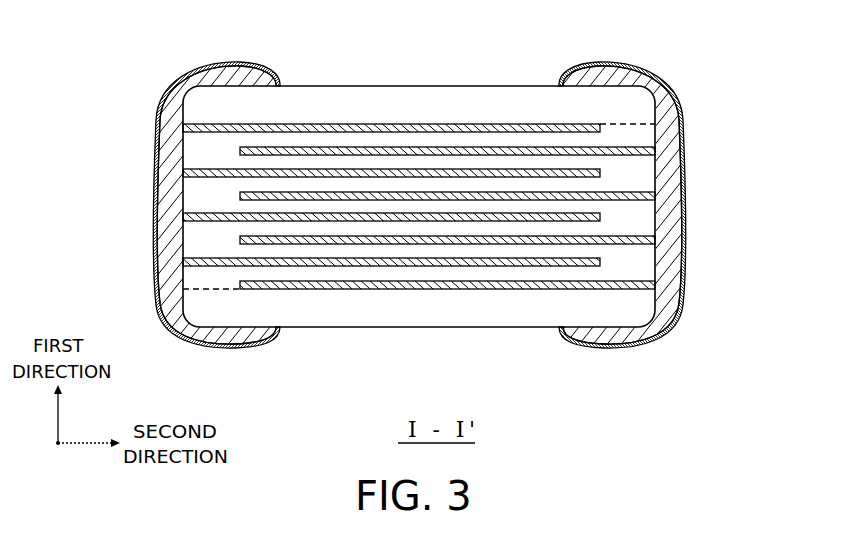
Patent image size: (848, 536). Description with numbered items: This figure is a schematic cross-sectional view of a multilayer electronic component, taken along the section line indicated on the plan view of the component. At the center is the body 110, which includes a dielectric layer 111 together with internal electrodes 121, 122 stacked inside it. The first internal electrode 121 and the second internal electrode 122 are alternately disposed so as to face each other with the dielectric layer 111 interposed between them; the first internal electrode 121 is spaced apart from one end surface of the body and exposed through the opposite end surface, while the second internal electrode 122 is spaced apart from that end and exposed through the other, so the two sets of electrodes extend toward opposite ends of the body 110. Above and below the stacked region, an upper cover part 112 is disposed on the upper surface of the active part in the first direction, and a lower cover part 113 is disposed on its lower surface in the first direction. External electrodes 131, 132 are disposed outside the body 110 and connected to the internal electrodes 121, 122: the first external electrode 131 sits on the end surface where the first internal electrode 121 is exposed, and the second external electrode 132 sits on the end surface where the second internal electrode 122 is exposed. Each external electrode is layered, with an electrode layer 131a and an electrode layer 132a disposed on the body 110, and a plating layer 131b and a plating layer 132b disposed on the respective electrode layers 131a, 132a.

The body 110 is at (431, 86).
The dielectric layer 111 is at (311, 163).
The upper cover part 112 is at (377, 97).
The lower cover part 113 is at (432, 308).
The first internal electrode 121 is at (489, 124).
The second internal electrode 122 is at (508, 147).
The first external electrode 131 is at (259, 202).
The electrode layer 131a is at (170, 176).
The plating layer 131b is at (157, 226).
The second external electrode 132 is at (584, 202).
The electrode layer 132a is at (668, 164).
The plating layer 132b is at (685, 203).